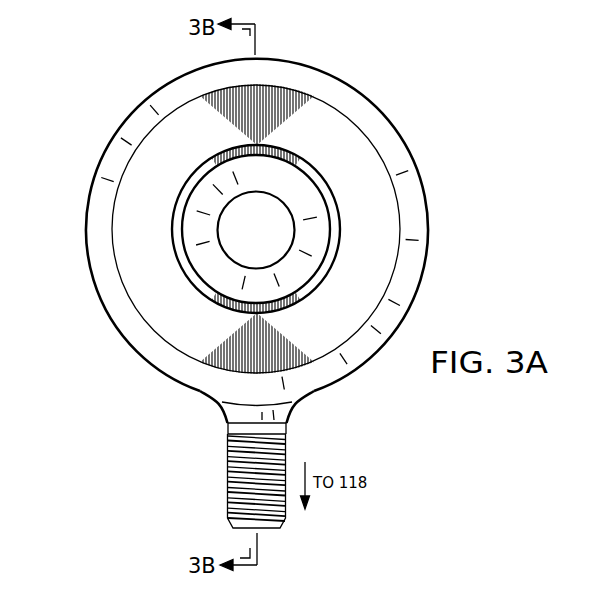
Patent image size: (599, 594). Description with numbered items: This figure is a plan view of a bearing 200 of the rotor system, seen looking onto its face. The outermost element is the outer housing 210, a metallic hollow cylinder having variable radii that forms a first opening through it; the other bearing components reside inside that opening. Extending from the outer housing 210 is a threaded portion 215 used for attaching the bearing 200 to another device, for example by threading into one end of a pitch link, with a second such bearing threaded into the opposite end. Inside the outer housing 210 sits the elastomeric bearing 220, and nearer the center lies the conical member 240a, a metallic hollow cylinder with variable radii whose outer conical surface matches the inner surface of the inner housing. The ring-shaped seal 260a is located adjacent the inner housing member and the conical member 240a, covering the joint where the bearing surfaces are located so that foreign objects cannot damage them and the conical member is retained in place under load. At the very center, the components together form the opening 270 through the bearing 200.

The bearing 200 is at (108, 94).
The outer housing 210 is at (137, 345).
The elastomeric bearing 220 is at (128, 232).
The conical member 240a is at (298, 188).
The seal 260a is at (337, 218).
The opening 270 is at (266, 241).
The threaded portion 215 is at (230, 472).